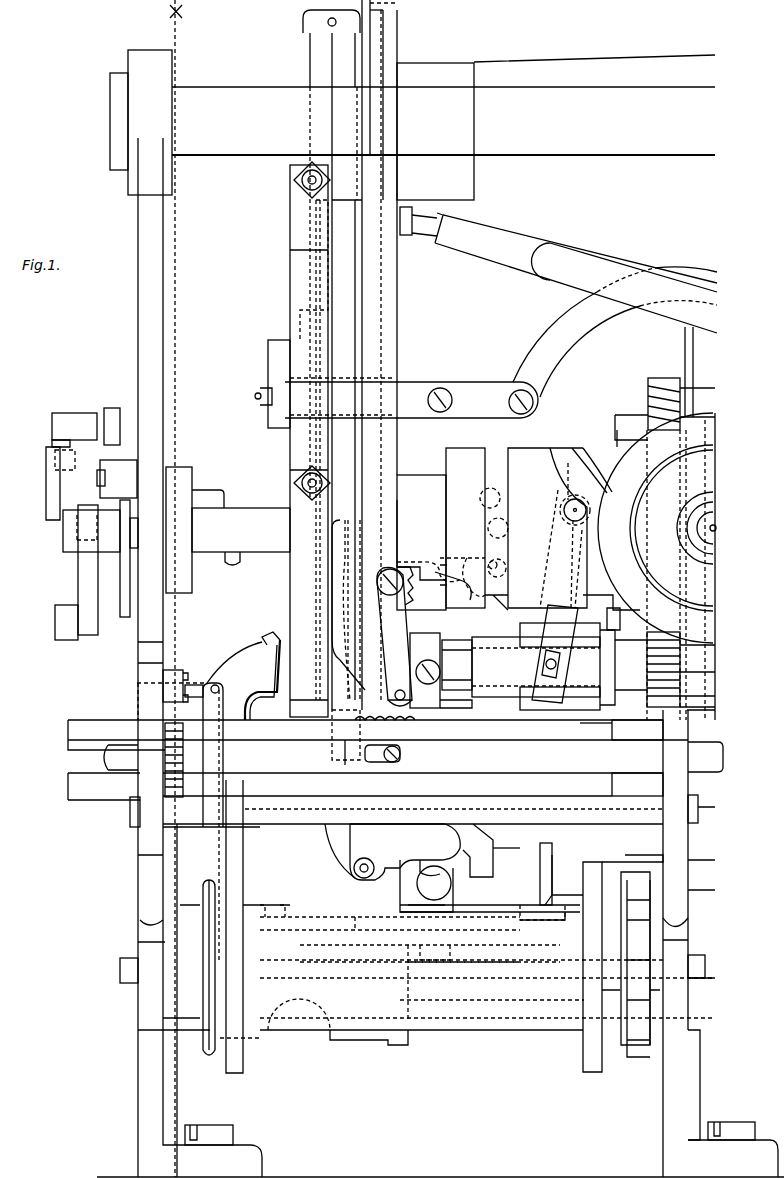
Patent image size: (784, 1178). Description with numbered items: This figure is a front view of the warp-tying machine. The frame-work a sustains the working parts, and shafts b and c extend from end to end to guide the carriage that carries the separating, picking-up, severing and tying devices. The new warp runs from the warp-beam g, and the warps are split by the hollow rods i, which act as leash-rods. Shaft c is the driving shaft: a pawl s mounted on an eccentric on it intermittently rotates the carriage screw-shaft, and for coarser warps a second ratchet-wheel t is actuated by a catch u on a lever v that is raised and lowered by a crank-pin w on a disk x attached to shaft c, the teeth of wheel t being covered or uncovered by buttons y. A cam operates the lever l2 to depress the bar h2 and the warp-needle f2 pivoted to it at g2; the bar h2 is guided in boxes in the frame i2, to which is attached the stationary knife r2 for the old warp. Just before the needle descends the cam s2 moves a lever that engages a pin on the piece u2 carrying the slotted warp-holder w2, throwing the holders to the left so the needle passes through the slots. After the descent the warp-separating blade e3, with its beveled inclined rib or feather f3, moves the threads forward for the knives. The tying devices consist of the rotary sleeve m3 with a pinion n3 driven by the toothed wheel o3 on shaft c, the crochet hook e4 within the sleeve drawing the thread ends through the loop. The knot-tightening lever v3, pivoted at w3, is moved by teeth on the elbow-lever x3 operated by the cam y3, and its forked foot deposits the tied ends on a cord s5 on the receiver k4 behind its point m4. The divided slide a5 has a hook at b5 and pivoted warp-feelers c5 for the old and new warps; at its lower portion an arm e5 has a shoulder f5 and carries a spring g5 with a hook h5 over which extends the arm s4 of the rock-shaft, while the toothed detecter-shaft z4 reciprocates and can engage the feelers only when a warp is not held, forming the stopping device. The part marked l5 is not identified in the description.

The frame-work a is at (440, 588).
The shaft b is at (443, 127).
The shaft c is at (241, 536).
The warp-feelers c5 is at (405, 852).
The warp-separating blade e3 is at (385, 695).
The crochet-hook e4 is at (625, 235).
The arm e5 is at (420, 962).
The warp-needle f2 is at (272, 370).
The inclined rib or feather f3 is at (340, 450).
The shoulder f5 is at (542, 908).
The warp-beam g is at (439, 1000).
The pivot g2 is at (328, 22).
The spring g5 is at (351, 967).
The bar h2 is at (330, 752).
The hook h5 is at (564, 880).
The hollow rods i is at (365, 772).
The frame i2 is at (567, 656).
The receiver k4 is at (241, 796).
The lever l2 is at (501, 342).
The rod l5 is at (378, 926).
The rotary sleeve m3 is at (457, 665).
The point of receiver m4 is at (236, 651).
The pinion n3 is at (647, 698).
The toothed wheel o3 is at (647, 380).
The stationary knife r2 is at (310, 439).
The pawl s is at (195, 530).
The cam s2 is at (581, 479).
The arm s4 is at (568, 840).
The cord s5 is at (220, 668).
The second ratchet-wheel t is at (91, 570).
The catch u is at (74, 430).
The piece u2 is at (556, 646).
The lever v is at (112, 426).
The knot-tightening lever v3 is at (394, 636).
The crank-pin w is at (91, 483).
The warp-holder w2 is at (456, 710).
The pivot w3 is at (392, 577).
The disk x is at (129, 558).
The elbow-lever x3 is at (434, 581).
The buttons y is at (66, 622).
The cam y3 is at (474, 529).
The toothed detecter-shaft z4 is at (426, 886).
The divided slide a5 is at (313, 851).
The hook b5 is at (491, 850).